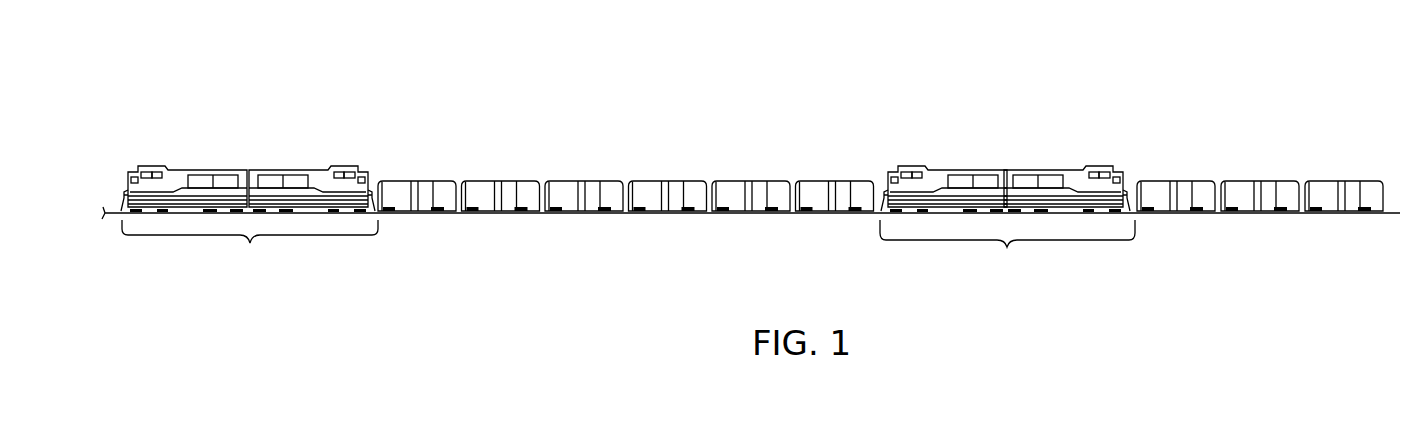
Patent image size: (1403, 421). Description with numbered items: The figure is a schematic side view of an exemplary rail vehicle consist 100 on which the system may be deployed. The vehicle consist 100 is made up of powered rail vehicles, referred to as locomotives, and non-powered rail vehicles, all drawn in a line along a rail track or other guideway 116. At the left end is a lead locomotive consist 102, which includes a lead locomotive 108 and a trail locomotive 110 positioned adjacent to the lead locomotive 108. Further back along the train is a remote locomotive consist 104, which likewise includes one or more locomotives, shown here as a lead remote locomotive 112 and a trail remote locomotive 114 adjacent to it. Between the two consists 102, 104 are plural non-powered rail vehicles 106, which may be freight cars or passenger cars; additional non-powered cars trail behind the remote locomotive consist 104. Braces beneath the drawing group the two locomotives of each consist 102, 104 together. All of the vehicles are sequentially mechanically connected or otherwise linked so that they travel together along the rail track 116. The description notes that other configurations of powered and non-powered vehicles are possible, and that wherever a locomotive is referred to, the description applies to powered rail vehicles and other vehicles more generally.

The vehicle consist 100 is at (751, 183).
The lead locomotive consist 102 is at (250, 243).
The remote locomotive consist 104 is at (1007, 247).
The non-powered rail vehicles 106 is at (525, 179).
The lead locomotive 108 is at (184, 167).
The trail locomotive 110 is at (323, 167).
The lead remote locomotive 112 is at (940, 167).
The trail remote locomotive 114 is at (1082, 167).
The rail track 116 is at (1338, 215).